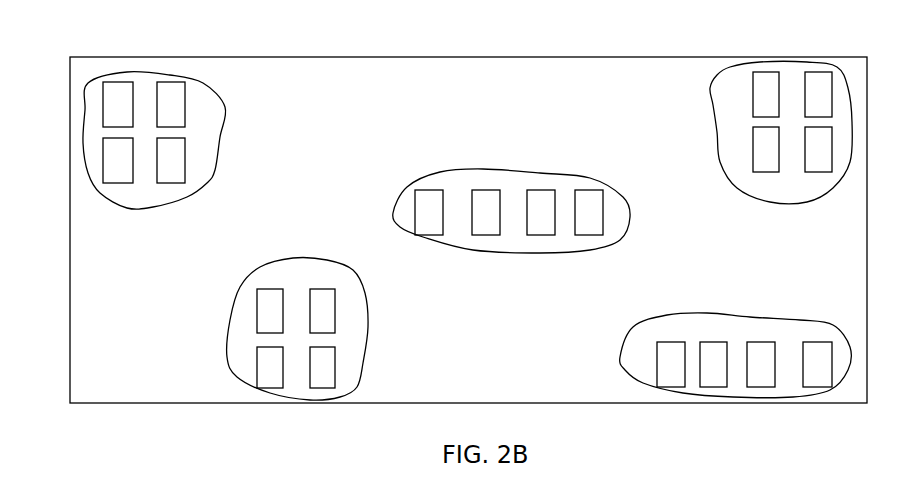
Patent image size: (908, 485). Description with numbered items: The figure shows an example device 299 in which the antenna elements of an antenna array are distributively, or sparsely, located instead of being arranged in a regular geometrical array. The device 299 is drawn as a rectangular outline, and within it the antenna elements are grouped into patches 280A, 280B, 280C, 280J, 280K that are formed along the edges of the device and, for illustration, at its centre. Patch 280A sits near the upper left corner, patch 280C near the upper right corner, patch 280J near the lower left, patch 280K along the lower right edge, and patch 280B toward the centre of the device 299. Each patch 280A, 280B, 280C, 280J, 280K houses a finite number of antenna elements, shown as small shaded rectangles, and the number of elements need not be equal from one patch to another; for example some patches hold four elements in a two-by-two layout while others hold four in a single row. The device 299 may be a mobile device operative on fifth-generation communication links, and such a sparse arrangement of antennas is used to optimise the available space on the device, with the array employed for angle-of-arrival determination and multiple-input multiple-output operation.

The device 299 is at (501, 376).
The patch 280A is at (222, 176).
The patch 280B is at (413, 178).
The patch 280C is at (717, 147).
The patch 280J is at (228, 348).
The patch 280K is at (715, 312).